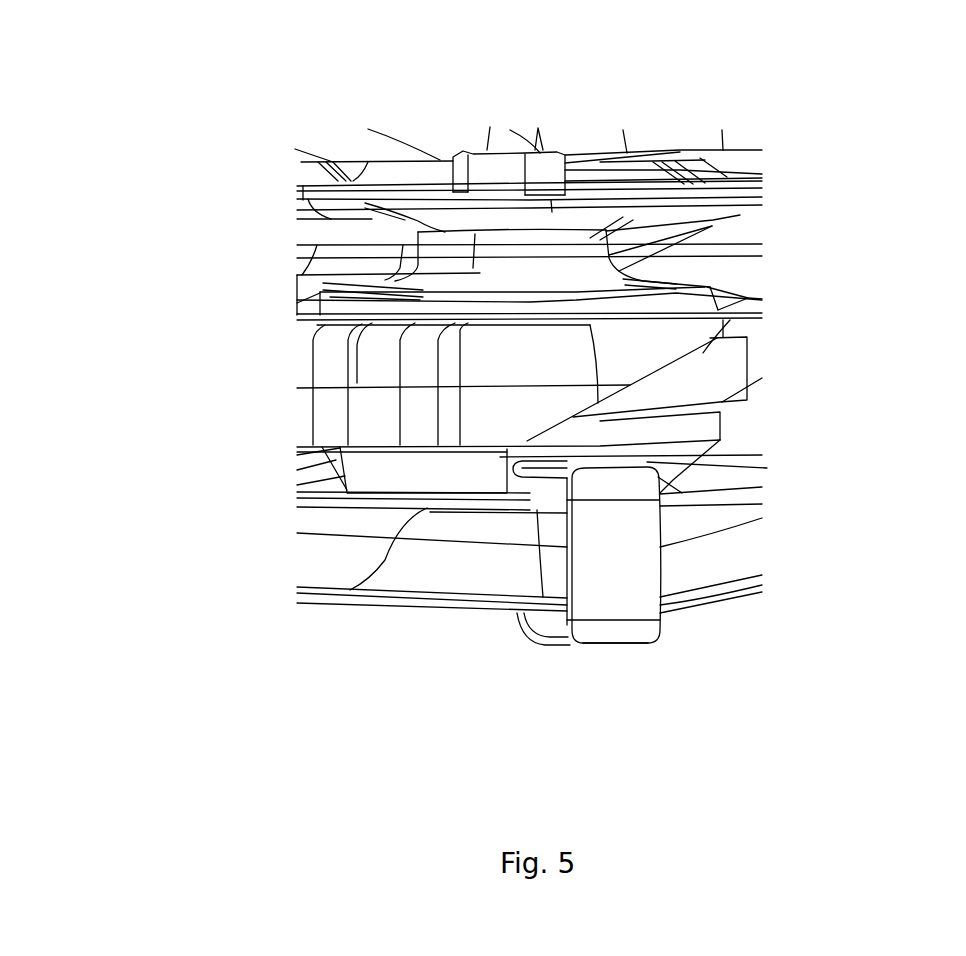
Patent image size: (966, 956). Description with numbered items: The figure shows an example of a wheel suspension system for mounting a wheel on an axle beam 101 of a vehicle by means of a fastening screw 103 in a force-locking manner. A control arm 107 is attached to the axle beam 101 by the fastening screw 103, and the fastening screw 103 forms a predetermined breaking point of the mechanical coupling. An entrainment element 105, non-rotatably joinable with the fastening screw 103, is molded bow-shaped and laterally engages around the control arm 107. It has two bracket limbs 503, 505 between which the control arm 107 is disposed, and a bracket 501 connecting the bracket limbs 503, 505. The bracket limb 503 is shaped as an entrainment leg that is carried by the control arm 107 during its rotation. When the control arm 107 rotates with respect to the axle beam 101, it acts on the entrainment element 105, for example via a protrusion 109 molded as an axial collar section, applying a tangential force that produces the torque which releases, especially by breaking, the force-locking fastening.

The axle beam 101 is at (309, 183).
The fastening screw 103 is at (500, 182).
The entrainment element 105 is at (658, 647).
The control arm 107 is at (670, 332).
The protrusion 109 is at (395, 462).
The bracket 501 is at (637, 537).
The bracket limb 503 is at (640, 463).
The bracket limb 505 is at (542, 641).